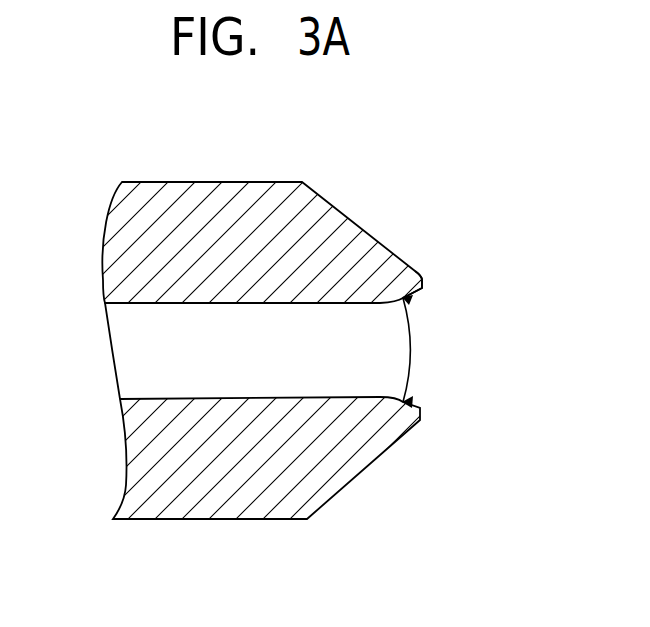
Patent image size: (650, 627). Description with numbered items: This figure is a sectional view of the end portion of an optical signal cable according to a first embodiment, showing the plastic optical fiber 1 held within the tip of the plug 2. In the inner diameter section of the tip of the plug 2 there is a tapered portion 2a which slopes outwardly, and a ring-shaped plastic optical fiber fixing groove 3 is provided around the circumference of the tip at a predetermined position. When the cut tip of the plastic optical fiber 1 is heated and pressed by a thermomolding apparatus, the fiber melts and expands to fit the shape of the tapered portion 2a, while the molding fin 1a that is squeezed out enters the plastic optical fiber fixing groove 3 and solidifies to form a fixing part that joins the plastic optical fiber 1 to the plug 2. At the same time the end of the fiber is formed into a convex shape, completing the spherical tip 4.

The plastic optical fiber 1 is at (202, 347).
The molding fin 1a is at (406, 400).
The plug 2 is at (232, 217).
The tapered portion 2a is at (406, 299).
The plastic optical fiber fixing groove 3 is at (415, 273).
The spherical tip 4 is at (410, 348).